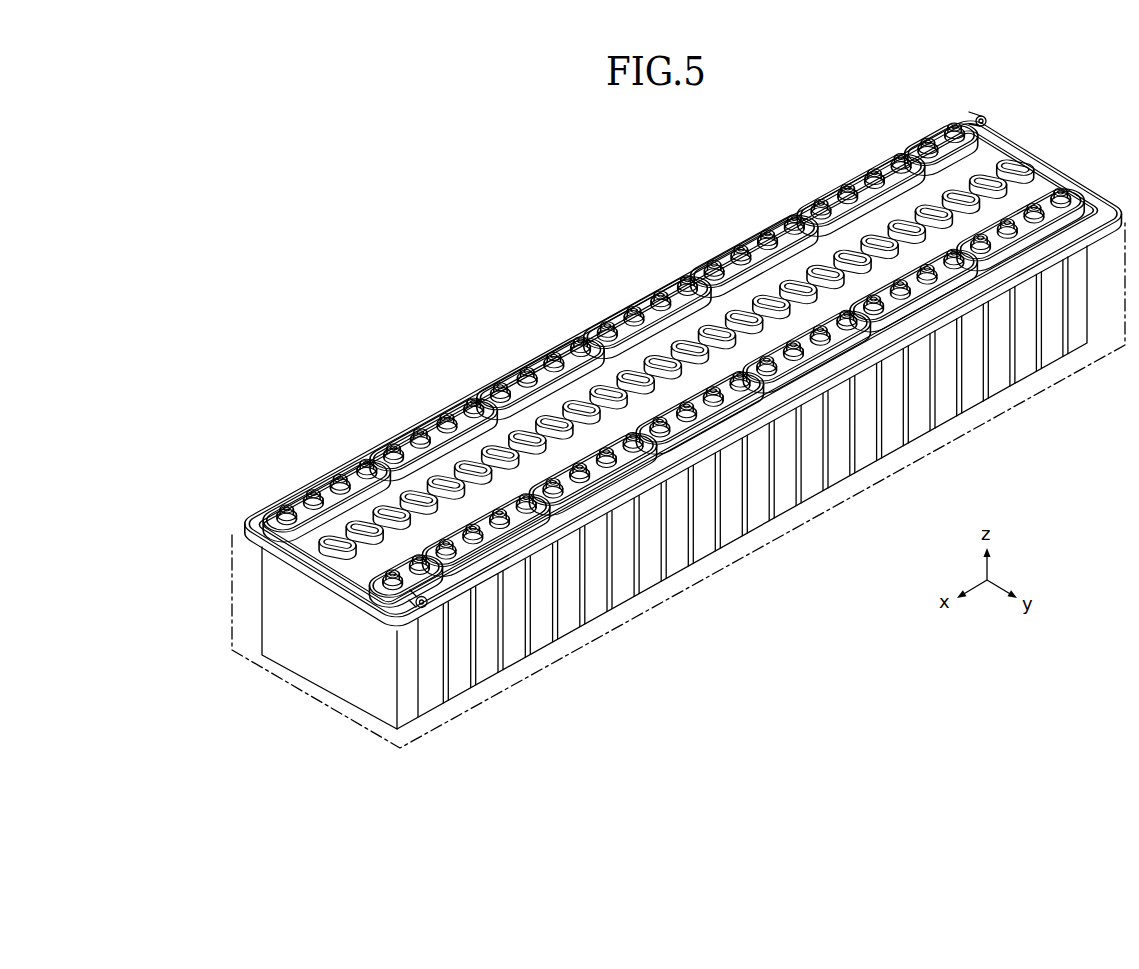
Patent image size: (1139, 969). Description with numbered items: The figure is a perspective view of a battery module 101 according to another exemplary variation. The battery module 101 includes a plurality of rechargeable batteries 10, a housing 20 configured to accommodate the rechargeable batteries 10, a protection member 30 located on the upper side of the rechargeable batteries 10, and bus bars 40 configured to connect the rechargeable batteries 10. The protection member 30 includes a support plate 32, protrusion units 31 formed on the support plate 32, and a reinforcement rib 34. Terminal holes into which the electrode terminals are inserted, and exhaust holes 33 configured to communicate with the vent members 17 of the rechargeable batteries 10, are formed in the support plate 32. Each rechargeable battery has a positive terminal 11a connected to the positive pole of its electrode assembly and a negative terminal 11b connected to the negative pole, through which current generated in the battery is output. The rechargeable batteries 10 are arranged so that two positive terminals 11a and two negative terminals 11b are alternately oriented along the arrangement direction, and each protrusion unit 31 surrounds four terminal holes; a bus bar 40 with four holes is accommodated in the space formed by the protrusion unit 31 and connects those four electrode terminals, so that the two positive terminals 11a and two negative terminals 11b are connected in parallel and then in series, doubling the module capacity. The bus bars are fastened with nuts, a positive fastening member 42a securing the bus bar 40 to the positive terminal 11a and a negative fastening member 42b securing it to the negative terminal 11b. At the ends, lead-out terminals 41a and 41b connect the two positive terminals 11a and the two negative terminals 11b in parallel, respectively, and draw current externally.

The battery module 101 is at (487, 275).
The rechargeable batteries 10 is at (518, 655).
The housing 20 is at (607, 650).
The vent members 17 is at (263, 653).
The protection member 30 is at (660, 430).
The support plate 32 is at (1029, 155).
The reinforcement rib 34 is at (251, 538).
The exhaust holes 33 is at (323, 550).
The bus bar 40 is at (296, 508).
The protrusion units 31 is at (346, 464).
The positive terminal 11a is at (284, 510).
The negative terminal 11b is at (338, 480).
The positive fastening member 42a is at (279, 512).
The negative fastening member 42b is at (367, 456).
The lead-out terminal 41a is at (989, 117).
The lead-out terminal 41b is at (421, 608).